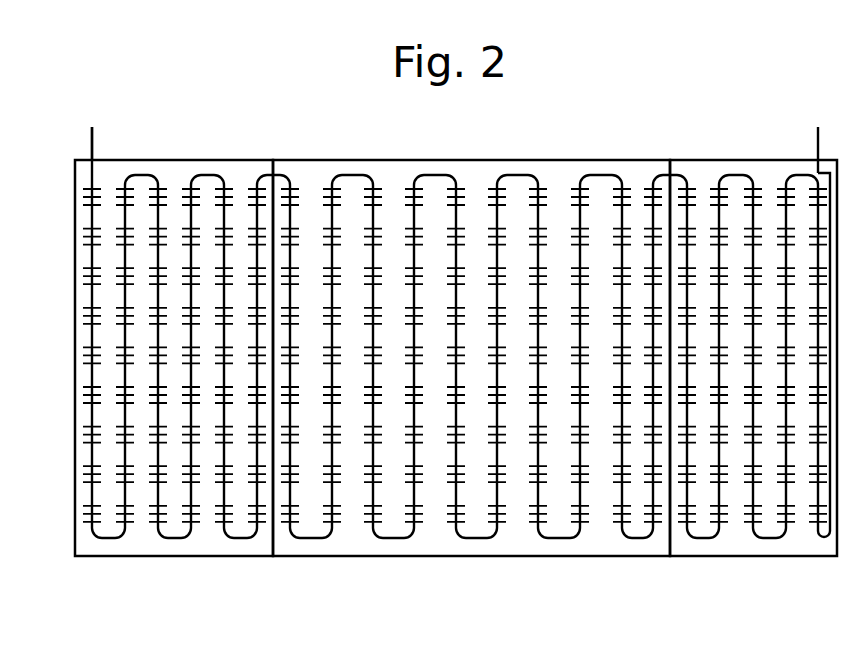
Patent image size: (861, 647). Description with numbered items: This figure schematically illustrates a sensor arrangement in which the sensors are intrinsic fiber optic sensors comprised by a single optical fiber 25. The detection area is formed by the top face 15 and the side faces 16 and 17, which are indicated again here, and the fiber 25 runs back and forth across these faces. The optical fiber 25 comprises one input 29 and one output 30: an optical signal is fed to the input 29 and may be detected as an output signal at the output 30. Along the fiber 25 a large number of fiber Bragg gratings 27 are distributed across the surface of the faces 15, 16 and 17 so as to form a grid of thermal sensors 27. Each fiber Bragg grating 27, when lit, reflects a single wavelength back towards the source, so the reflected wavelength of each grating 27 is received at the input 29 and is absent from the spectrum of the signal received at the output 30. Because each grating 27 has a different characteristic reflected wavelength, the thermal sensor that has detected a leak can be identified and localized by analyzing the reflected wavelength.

The top face 15 is at (517, 530).
The side face 16 is at (208, 533).
The side face 17 is at (798, 530).
The optical fiber 25 is at (95, 145).
The fiber Bragg gratings 27 is at (92, 230).
The input 29 is at (92, 127).
The output 30 is at (816, 146).